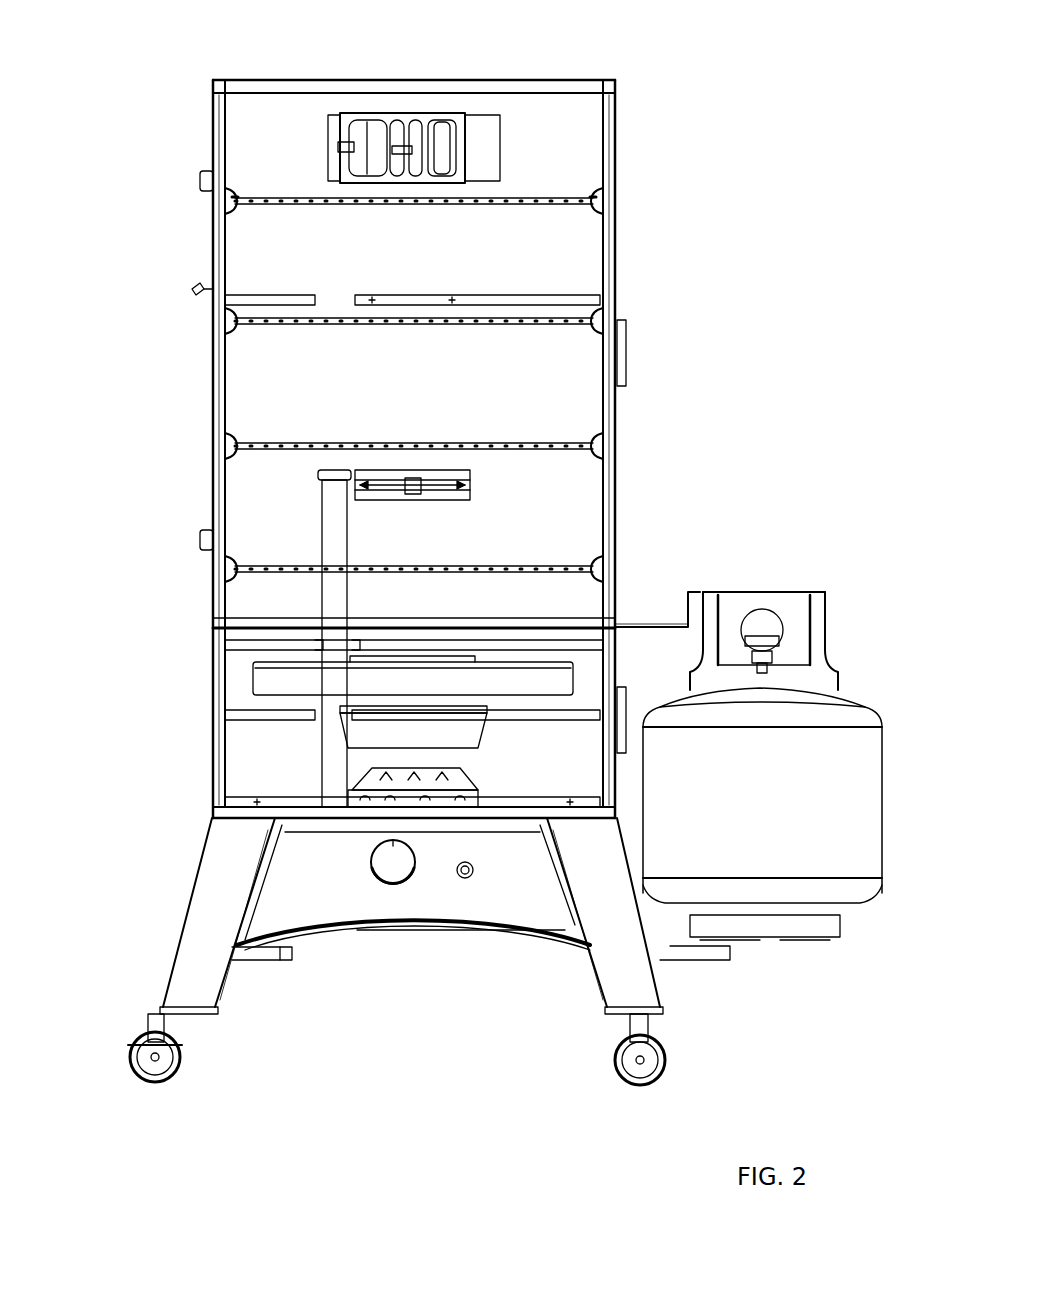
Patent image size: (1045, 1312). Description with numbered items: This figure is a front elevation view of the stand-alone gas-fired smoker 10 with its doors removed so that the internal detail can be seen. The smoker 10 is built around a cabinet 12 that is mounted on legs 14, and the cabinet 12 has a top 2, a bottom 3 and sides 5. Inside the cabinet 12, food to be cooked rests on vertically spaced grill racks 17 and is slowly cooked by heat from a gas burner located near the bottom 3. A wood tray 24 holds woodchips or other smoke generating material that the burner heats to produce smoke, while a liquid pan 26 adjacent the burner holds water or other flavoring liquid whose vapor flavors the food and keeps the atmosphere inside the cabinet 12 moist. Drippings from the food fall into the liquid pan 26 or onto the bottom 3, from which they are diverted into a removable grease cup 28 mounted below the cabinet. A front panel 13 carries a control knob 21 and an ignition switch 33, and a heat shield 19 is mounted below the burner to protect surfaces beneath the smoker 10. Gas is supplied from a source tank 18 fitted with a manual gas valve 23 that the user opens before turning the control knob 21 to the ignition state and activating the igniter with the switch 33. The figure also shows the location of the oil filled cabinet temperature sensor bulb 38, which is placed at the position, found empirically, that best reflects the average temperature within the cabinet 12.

The top 2 is at (488, 79).
The bottom 3 is at (257, 807).
The sides 5 is at (215, 395).
The gas-fired smoker 10 is at (733, 112).
The cabinet 12 is at (620, 258).
The front panel 13 is at (318, 882).
The legs 14 is at (200, 945).
The grill racks 17 is at (445, 201).
The source (tank) of flammable gas 18 is at (853, 697).
The heat shield 19 is at (443, 937).
The control knob 21 is at (393, 866).
The manual gas valve 23 is at (762, 640).
The wood tray 24 is at (393, 732).
The liquid pan 26 is at (308, 672).
The removable grease cup 28 is at (273, 953).
The ignition switch 33 is at (470, 876).
The cabinet temperature sensor bulb 38 is at (442, 485).